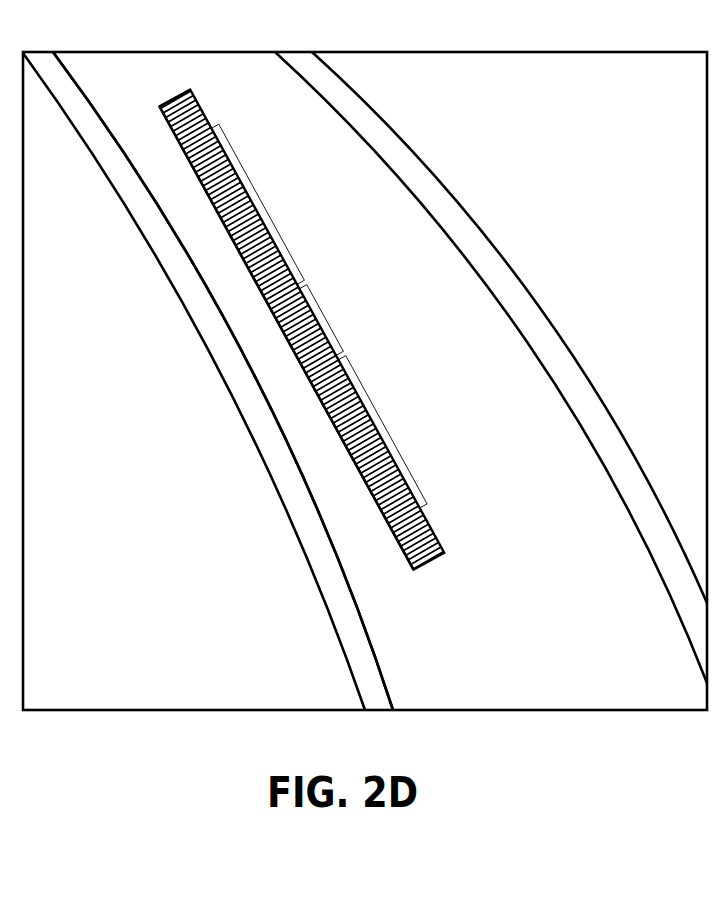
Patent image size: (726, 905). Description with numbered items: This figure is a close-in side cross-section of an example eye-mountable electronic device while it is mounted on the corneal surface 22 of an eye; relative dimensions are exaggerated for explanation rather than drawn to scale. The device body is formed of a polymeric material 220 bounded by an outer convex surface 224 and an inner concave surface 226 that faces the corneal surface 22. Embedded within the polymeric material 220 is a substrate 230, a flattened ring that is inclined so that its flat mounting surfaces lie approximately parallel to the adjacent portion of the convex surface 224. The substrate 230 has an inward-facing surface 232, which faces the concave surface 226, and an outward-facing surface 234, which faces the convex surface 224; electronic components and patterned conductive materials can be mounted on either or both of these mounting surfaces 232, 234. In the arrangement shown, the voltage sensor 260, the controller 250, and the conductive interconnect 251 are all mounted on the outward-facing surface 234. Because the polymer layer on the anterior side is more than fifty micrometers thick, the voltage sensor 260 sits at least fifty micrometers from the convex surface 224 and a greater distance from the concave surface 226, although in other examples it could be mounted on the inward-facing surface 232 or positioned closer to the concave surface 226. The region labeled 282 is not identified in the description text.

The corneal surface 22 is at (352, 672).
The polymeric material 220 is at (620, 682).
The convex surface 224 is at (417, 193).
The concave surface 226 is at (323, 527).
The substrate 230 is at (437, 537).
The inward-facing surface 232 is at (163, 122).
The outward-facing surface 234 is at (199, 103).
The controller 250 is at (217, 213).
The conductive interconnect 251 is at (318, 327).
The voltage sensor 260 is at (374, 423).
The inner region (lumen) 282 is at (115, 682).